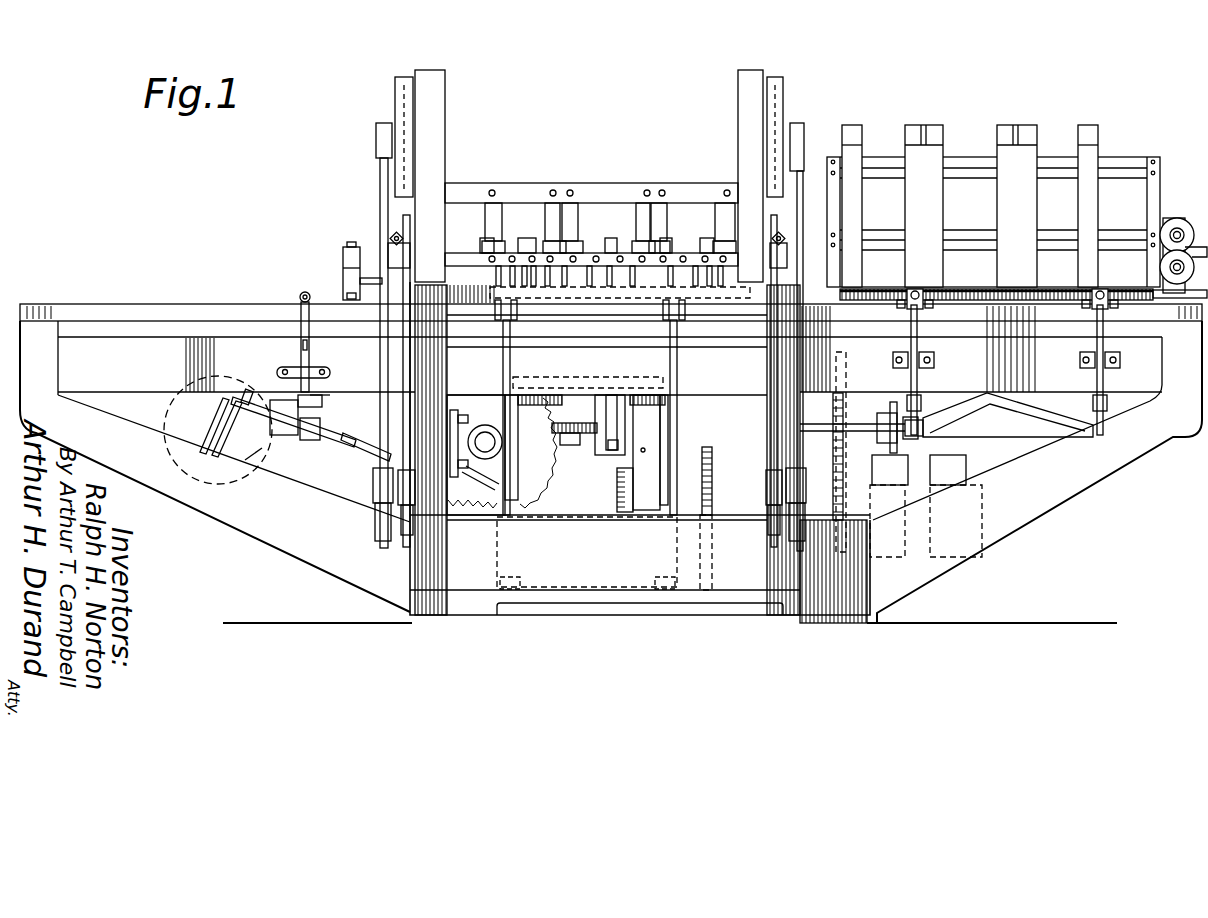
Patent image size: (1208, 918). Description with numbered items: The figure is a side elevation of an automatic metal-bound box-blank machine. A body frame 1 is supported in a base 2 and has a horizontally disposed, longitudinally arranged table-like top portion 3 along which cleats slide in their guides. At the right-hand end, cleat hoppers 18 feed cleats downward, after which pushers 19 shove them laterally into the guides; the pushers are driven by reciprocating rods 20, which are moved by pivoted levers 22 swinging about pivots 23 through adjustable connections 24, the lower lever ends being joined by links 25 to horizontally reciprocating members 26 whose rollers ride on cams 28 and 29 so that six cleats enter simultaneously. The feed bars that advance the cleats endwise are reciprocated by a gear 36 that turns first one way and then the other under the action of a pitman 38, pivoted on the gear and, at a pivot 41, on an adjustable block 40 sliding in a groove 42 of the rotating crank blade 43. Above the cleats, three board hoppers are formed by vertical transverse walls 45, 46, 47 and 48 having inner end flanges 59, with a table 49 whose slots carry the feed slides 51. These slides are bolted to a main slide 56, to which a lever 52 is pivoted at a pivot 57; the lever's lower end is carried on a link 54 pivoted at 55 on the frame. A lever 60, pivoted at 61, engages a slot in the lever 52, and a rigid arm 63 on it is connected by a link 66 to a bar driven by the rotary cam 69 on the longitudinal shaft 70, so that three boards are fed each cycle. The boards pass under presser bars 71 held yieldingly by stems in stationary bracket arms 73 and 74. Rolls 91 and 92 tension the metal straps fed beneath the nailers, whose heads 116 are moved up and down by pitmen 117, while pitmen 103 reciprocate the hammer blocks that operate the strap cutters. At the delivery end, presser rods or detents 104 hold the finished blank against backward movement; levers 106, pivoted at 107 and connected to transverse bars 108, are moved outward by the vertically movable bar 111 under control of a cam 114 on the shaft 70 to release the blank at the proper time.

The body frame 1 is at (1145, 380).
The base 2 is at (762, 570).
The table-like top portion 3 is at (160, 332).
The cleat hoppers 18 is at (860, 126).
The pushers 19 is at (962, 291).
The reciprocating rods 20 is at (926, 303).
The pivoted levers 22 is at (1103, 330).
The lever pivot 23 is at (930, 366).
The adjustable connections 24 is at (900, 304).
The links 25 is at (921, 403).
The horizontally reciprocating members 26 is at (921, 438).
The cam 28 is at (910, 447).
The cam 29 is at (892, 448).
The gear 36 is at (545, 470).
The pitman 38 is at (218, 430).
The adjustable block 40 is at (218, 408).
The pitman pivot 41 is at (243, 393).
The groove 42 is at (210, 427).
The crank blade 43 is at (262, 452).
The hopper wall 45 is at (478, 186).
The hopper wall 46 is at (560, 188).
The hopper wall 47 is at (644, 190).
The hopper wall 48 is at (735, 212).
The hopper table 49 is at (452, 292).
The feed slides 51 is at (500, 284).
The lever 52 is at (509, 330).
The link 54 is at (515, 580).
The link pivot 55 is at (582, 584).
The main slide 56 is at (590, 298).
The lever pivot on slide 57 is at (518, 312).
The inner end flanges 59 is at (555, 212).
The lever 60 is at (517, 465).
The lever pivot 61 is at (585, 378).
The arm 63 is at (600, 425).
The link 66 is at (613, 452).
The rotary cam 69 is at (625, 490).
The shaft 70 is at (572, 430).
The presser bars 71 is at (343, 283).
The stationary bracket arm 73 is at (343, 250).
The stationary bracket arm 74 is at (343, 270).
The tensioning device 91 is at (1163, 232).
The tensioning device 92 is at (1160, 266).
The pitmen 103 is at (380, 185).
The presser rods 104 is at (303, 293).
The levers 106 is at (300, 316).
The lever pivot 107 is at (290, 368).
The horizontally movable bars 108 is at (310, 347).
The vertically movable bar 111 is at (312, 403).
The cam 114 is at (312, 444).
The nailing heads 116 is at (392, 238).
The pitmen 117 is at (370, 450).